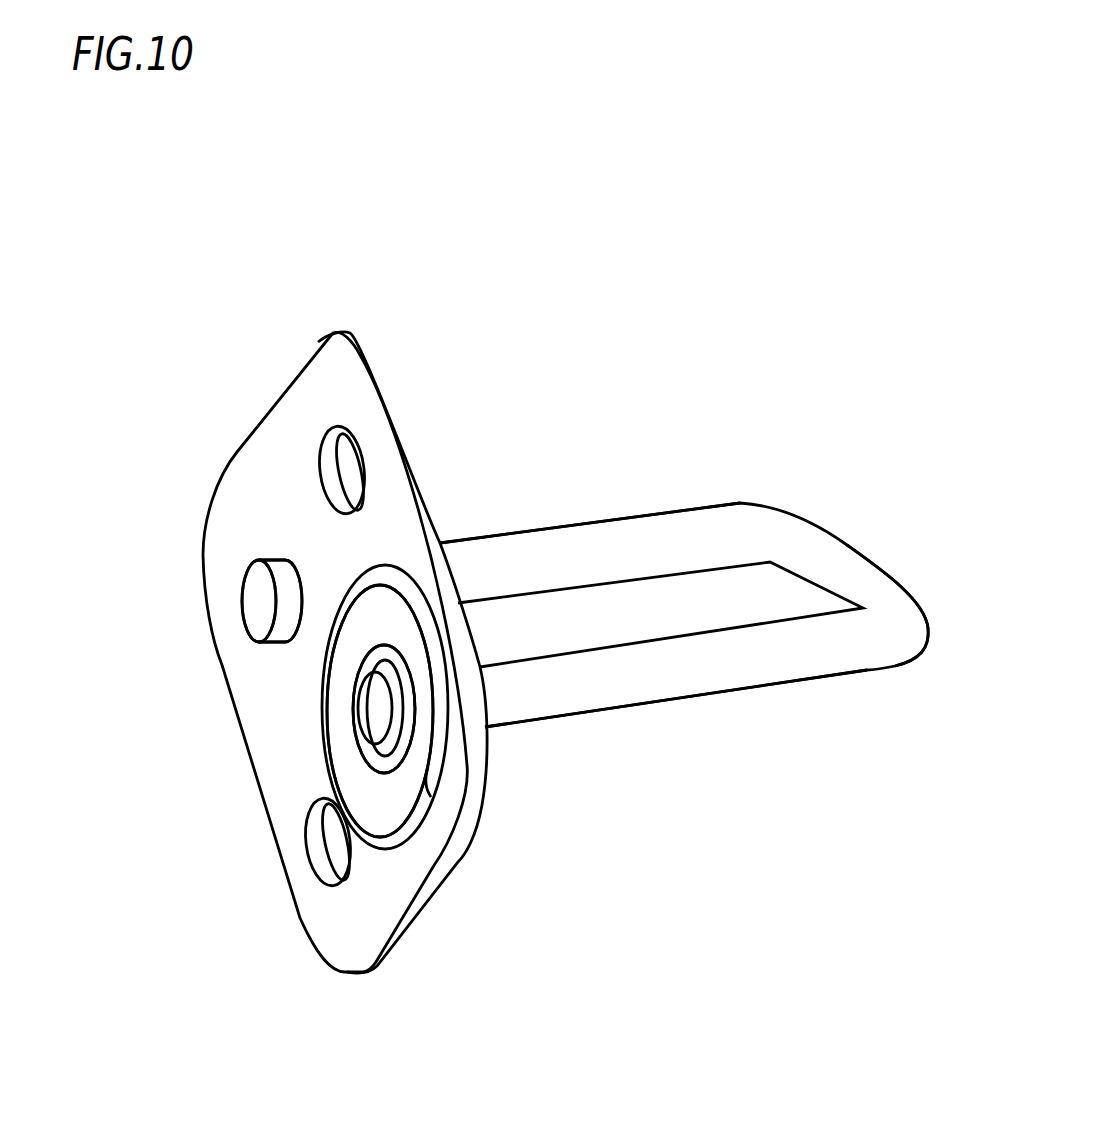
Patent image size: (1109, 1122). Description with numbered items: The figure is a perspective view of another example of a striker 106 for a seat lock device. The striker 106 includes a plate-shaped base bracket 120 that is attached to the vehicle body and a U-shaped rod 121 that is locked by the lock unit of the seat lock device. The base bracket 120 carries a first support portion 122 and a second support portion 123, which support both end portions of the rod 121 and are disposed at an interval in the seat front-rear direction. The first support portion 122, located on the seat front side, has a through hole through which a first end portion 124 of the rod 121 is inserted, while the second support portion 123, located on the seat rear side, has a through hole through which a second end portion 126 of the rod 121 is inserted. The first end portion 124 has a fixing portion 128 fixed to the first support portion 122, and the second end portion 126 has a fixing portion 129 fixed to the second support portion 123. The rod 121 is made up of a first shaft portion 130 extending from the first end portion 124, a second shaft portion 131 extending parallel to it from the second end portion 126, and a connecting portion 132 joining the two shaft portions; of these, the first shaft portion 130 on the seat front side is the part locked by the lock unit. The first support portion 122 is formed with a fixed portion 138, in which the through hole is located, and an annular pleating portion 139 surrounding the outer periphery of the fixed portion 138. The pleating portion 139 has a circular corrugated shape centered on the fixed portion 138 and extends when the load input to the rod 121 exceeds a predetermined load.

The striker 106 is at (718, 129).
The base bracket 120 is at (311, 341).
The rod 121 is at (788, 513).
The first support portion 122 is at (590, 947).
The second support portion 123 is at (257, 553).
The first end portion 124 is at (360, 744).
The second end portion 126 is at (251, 634).
The fixing portion 128 is at (365, 708).
The fixing portion 129 is at (259, 597).
The first shaft portion 130 is at (650, 687).
The second shaft portion 131 is at (627, 535).
The connecting portion 132 is at (845, 567).
The fixed portion 138 is at (388, 782).
The pleating portion 139 is at (430, 793).